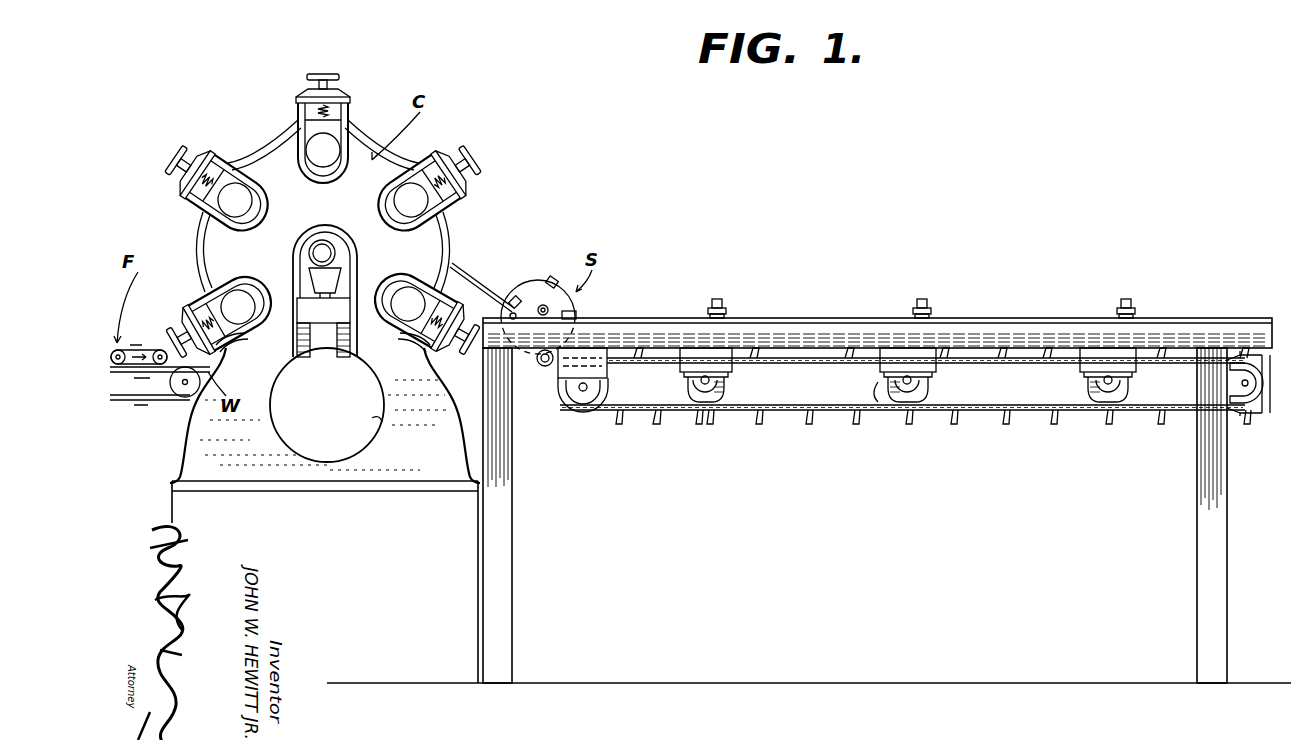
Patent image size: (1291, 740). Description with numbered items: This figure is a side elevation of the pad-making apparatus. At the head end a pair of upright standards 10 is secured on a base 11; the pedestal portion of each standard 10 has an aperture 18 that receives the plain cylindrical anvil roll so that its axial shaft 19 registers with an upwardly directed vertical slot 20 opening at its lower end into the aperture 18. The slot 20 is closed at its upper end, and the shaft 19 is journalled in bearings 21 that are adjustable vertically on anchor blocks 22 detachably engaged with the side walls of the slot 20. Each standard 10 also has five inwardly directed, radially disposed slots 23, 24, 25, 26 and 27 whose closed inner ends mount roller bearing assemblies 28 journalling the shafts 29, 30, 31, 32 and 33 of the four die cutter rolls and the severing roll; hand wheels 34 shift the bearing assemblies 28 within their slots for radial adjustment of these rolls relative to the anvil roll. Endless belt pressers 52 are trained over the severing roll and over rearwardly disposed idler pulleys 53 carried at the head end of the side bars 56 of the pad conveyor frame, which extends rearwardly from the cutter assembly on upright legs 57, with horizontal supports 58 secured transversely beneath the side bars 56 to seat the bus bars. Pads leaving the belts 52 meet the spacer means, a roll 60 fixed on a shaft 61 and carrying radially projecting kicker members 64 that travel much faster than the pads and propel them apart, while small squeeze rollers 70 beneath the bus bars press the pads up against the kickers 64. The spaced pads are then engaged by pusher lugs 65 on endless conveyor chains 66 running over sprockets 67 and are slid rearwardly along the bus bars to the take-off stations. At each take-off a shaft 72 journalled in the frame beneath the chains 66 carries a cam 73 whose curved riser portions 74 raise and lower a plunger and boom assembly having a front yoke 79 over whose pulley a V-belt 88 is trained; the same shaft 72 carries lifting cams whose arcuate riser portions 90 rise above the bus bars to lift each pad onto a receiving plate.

The upright standards 10 is at (276, 160).
The base 11 is at (402, 680).
The aperture 18 is at (376, 422).
The axial shaft 19 is at (320, 241).
The vertical slot 20 is at (310, 348).
The bearings 21 is at (340, 266).
The anchor blocks 22 is at (300, 313).
The slot 23 is at (228, 300).
The slot 24 is at (225, 183).
The slot 25 is at (343, 144).
The slot 26 is at (412, 180).
The slot 27 is at (417, 298).
The roller bearing assemblies 28 is at (300, 132).
The shaft 29 is at (243, 293).
The shaft 30 is at (240, 213).
The shaft 31 is at (325, 165).
The shaft 32 is at (398, 203).
The shaft 33 is at (401, 293).
The hand wheels 34 is at (327, 74).
The endless belt pressers 52 is at (474, 292).
The idler pulleys 53 is at (500, 314).
The side bars 56 is at (820, 320).
The upright legs 57 is at (512, 568).
The horizontal supports 58 is at (608, 368).
The spacer roll 60 is at (530, 292).
The shaft 61 is at (546, 303).
The kicker members 64 is at (551, 280).
The pusher lugs 65 is at (753, 352).
The endless conveyor chains 66 is at (656, 418).
The sprockets 67 is at (590, 412).
The squeeze rollers 70 is at (541, 367).
The cam shaft 72 is at (718, 382).
The cam 73 is at (680, 422).
The curved riser portions 74 is at (876, 392).
The front yoke 79 is at (727, 311).
The V-belt 88 is at (718, 299).
The arcuate riser portions 90 is at (708, 394).